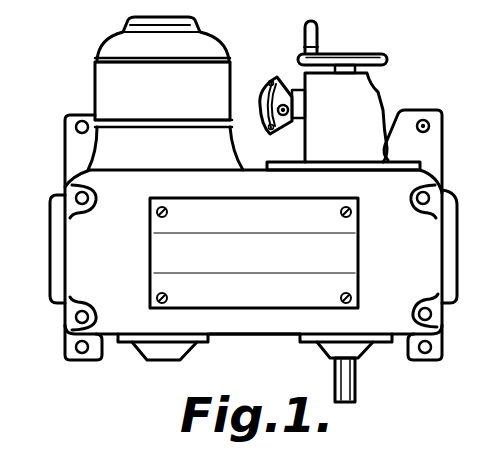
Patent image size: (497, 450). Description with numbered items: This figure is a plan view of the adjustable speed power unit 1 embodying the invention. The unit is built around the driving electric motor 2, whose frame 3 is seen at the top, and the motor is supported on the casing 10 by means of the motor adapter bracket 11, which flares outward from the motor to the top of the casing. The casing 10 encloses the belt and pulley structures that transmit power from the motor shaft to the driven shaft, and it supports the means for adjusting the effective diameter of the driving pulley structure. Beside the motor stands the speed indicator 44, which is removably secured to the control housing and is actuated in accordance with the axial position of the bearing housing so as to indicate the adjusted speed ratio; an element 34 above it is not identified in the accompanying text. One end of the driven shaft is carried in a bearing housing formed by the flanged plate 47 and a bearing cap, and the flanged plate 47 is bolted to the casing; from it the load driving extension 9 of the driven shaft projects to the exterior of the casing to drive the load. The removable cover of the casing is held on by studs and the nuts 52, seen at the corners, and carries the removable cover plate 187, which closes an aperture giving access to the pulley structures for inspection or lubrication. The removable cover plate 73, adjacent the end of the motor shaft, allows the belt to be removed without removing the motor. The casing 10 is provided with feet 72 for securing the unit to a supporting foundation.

The adjustable speed power unit 1 is at (262, 196).
The driving electric motor 2 is at (170, 104).
The frame 3 is at (95, 80).
The load driving extension 9 is at (357, 383).
The casing 10 is at (274, 336).
The motor adapter bracket 11 is at (90, 152).
The handle 34 is at (298, 61).
The speed indicator 44 is at (265, 100).
The flanged plate 47 is at (328, 357).
The nuts 52 is at (76, 197).
The feet 72 is at (62, 128).
The removable cover plate 73 is at (146, 356).
The removable cover plate 187 is at (357, 262).